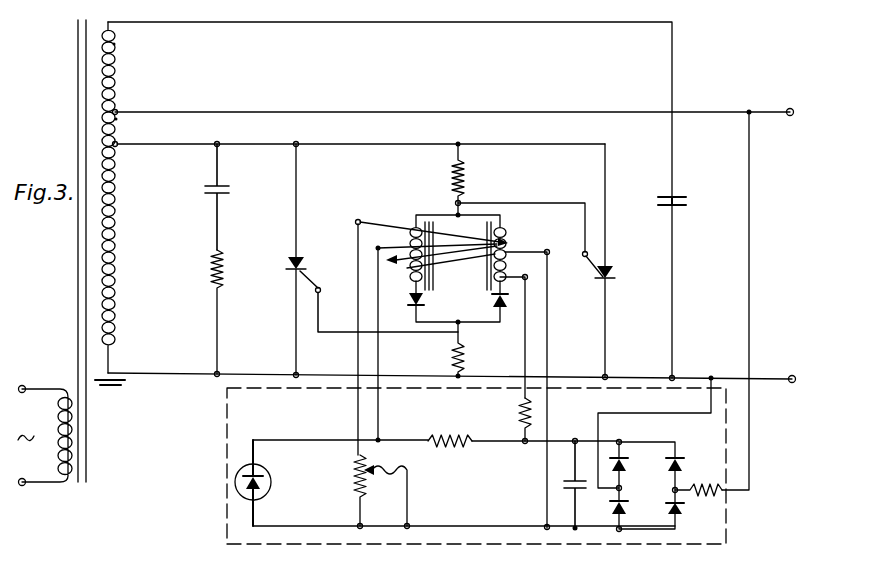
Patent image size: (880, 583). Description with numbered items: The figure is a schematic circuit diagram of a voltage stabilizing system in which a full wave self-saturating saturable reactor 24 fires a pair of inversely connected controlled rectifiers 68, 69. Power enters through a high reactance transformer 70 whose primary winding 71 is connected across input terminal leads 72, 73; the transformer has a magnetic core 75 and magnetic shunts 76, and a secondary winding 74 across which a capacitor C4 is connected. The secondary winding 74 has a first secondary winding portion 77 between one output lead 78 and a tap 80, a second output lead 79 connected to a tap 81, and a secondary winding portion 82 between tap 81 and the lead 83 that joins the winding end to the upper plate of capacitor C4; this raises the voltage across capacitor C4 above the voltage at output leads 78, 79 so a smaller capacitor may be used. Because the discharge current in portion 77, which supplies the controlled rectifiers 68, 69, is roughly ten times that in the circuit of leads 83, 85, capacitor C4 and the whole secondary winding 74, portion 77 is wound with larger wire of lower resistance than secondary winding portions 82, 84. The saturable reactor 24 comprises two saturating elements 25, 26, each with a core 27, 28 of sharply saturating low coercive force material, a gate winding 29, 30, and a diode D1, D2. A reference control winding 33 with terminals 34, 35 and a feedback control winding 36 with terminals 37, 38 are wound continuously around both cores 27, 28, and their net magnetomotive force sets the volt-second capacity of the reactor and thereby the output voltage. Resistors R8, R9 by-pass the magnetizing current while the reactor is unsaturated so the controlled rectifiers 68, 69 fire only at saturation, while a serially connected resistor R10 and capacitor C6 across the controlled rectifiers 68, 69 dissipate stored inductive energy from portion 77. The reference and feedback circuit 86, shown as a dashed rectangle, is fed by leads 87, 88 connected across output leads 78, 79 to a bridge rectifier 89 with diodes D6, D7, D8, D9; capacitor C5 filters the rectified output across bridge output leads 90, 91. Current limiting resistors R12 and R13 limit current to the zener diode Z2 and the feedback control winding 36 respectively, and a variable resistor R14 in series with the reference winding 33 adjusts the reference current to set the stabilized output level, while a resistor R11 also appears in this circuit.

The high reactance transformer 70 is at (68, 135).
The primary winding 71 is at (58, 430).
The input terminal lead 72 is at (36, 388).
The input terminal lead 73 is at (42, 484).
The secondary winding 74 is at (128, 60).
The magnetic core 75 is at (78, 256).
The magnetic shunts 76 is at (115, 386).
The first secondary winding portion 77 is at (117, 272).
The output lead 78 is at (730, 377).
The second output lead 79 is at (711, 114).
The tap 80 is at (118, 144).
The tap 81 is at (120, 111).
The secondary winding portion 82 is at (114, 44).
The lead 83 is at (566, 24).
The secondary winding portion 84 is at (116, 119).
The lead 85 is at (674, 297).
The reference and feedback circuit 86 is at (728, 528).
The lead 87 is at (683, 414).
The lead 88 is at (750, 424).
The bridge rectifier 89 is at (654, 492).
The bridge output lead 90 is at (557, 439).
The bridge output lead 91 is at (557, 526).
The self-saturating saturable reactor 24 is at (419, 210).
The saturating element 25 is at (408, 216).
The second winding 26 is at (517, 227).
The core 27 is at (430, 278).
The core 28 is at (490, 280).
The gate winding 29 is at (409, 235).
The winding 30 is at (508, 262).
The reference control winding 33 is at (372, 222).
The terminal 34 is at (358, 222).
The terminal 35 is at (378, 250).
The feedback control winding 36 is at (525, 250).
The terminal 37 is at (549, 252).
The terminal 38 is at (528, 277).
The controlled rectifier 68 is at (303, 264).
The controlled rectifier 69 is at (607, 268).
The capacitor C4 is at (686, 200).
The capacitor C5 is at (570, 484).
The capacitor C6 is at (229, 189).
The resistor R8 is at (468, 180).
The resistor R9 is at (462, 356).
The resistor R10 is at (225, 266).
The resistor R11 is at (706, 494).
The current limiting resistor R12 is at (450, 426).
The current limiting resistor R13 is at (519, 413).
The variable resistor R14 is at (355, 482).
The diode D1 is at (408, 300).
The diode D2 is at (504, 310).
The diode D6 is at (626, 462).
The diode D7 is at (681, 462).
The diode D8 is at (612, 505).
The diode D9 is at (670, 506).
The zener diode Z2 is at (266, 490).